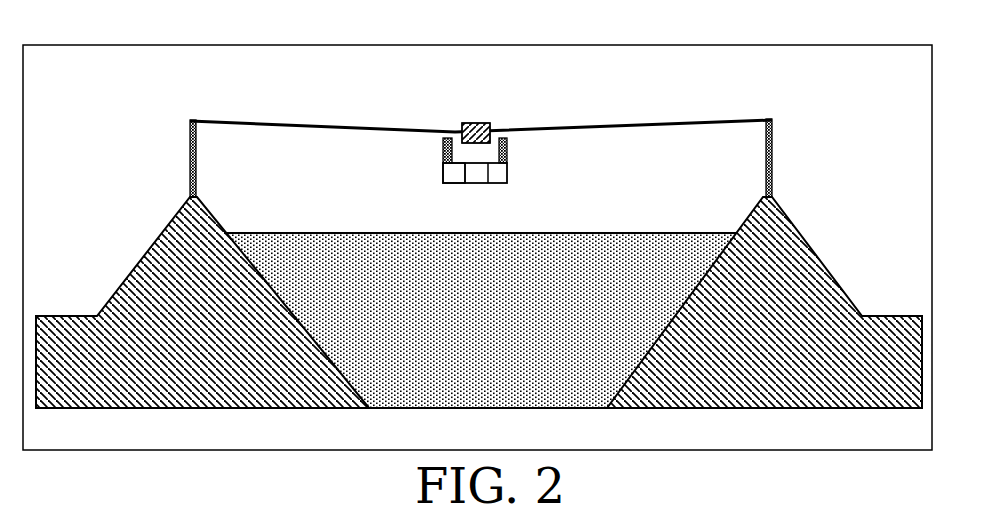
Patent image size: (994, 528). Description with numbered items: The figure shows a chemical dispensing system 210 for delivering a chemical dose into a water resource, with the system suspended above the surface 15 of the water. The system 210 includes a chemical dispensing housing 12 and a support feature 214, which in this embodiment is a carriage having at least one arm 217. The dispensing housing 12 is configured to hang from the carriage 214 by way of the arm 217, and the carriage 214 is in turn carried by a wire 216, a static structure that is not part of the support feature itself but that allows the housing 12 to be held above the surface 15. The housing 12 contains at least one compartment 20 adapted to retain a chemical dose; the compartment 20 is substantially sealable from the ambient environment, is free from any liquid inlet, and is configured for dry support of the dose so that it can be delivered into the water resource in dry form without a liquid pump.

The chemical dispensing housing 12 is at (508, 178).
The surface of the water resource 15 is at (258, 233).
The compartment 20 is at (453, 170).
The chemical dispensing system 210 is at (410, 178).
The support feature 214 is at (473, 122).
The wire 216 is at (268, 121).
The arm 217 is at (443, 141).